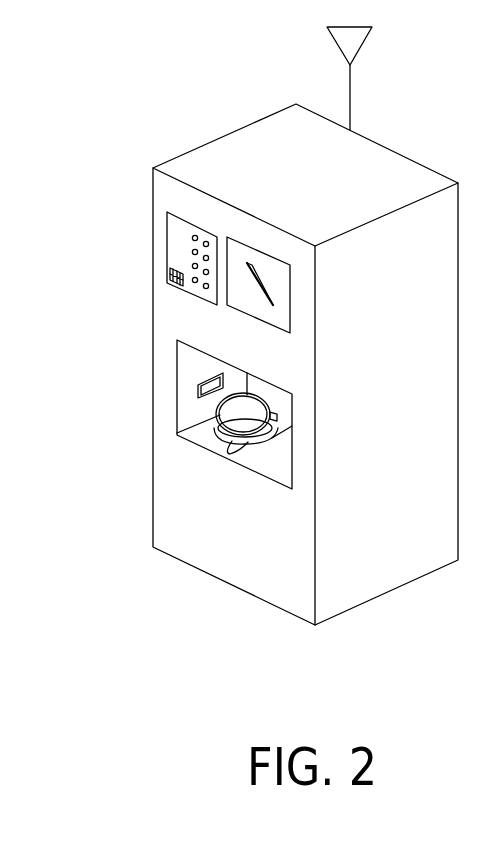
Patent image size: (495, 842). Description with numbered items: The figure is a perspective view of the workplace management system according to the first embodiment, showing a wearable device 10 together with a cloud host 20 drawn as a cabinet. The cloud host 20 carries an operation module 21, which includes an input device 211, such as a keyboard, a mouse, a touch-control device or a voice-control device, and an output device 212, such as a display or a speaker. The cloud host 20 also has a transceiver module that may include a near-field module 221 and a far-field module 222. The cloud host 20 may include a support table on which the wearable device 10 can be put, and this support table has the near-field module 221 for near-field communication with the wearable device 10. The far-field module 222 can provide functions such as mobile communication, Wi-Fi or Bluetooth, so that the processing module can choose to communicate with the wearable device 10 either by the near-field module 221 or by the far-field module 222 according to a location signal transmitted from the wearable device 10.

The wearable device 10 is at (218, 426).
The cloud host 20 is at (158, 224).
The operation module 21 is at (164, 272).
The input device 211 is at (190, 252).
The display 212 is at (237, 294).
The near-field module 221 is at (198, 388).
The far-field module 222 is at (342, 45).